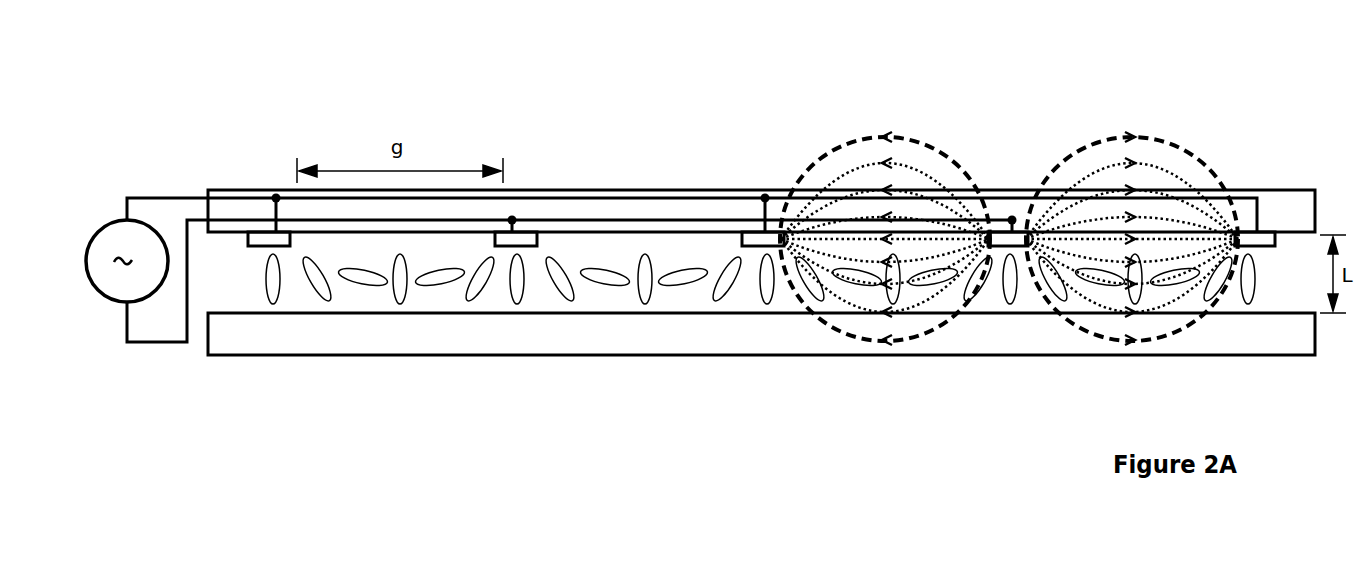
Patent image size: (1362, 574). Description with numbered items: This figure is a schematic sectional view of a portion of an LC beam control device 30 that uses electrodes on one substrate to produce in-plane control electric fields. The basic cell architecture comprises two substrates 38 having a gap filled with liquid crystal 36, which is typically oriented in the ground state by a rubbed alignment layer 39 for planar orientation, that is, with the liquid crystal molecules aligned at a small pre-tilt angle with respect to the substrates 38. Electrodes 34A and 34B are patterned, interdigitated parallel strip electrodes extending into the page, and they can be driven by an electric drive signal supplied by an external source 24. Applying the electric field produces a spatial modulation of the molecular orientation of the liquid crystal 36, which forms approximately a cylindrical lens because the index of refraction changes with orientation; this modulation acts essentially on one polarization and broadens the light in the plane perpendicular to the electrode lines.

The external source 24 is at (115, 238).
The LC beam control device 30 is at (1003, 168).
The electrode 34A is at (258, 238).
The electrode 34B is at (521, 238).
The liquid crystal 36 is at (678, 281).
The substrate 38 is at (1285, 212).
The rubbed alignment layer 39 is at (648, 230).